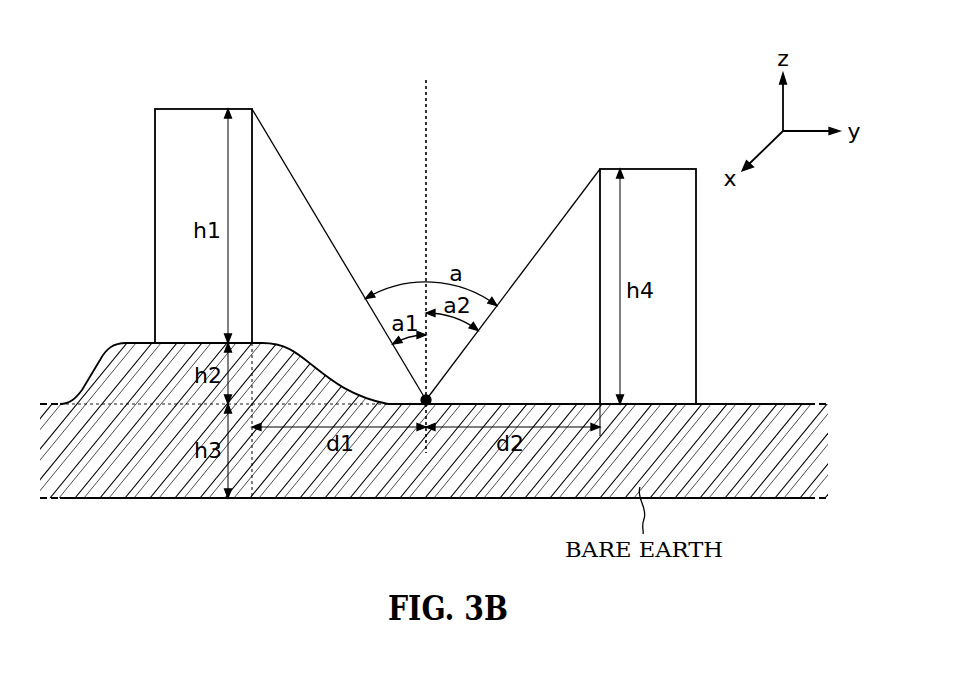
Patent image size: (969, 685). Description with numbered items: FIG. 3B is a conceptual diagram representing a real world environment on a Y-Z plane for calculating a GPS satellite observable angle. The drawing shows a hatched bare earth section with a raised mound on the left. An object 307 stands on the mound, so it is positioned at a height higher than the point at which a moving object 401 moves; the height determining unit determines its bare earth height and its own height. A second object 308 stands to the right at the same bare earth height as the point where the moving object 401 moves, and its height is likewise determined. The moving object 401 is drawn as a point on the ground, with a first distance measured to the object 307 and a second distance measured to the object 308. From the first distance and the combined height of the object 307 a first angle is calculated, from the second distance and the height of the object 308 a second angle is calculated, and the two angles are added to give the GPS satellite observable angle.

The object 307 is at (188, 118).
The object 308 is at (657, 181).
The moving object 401 is at (430, 403).